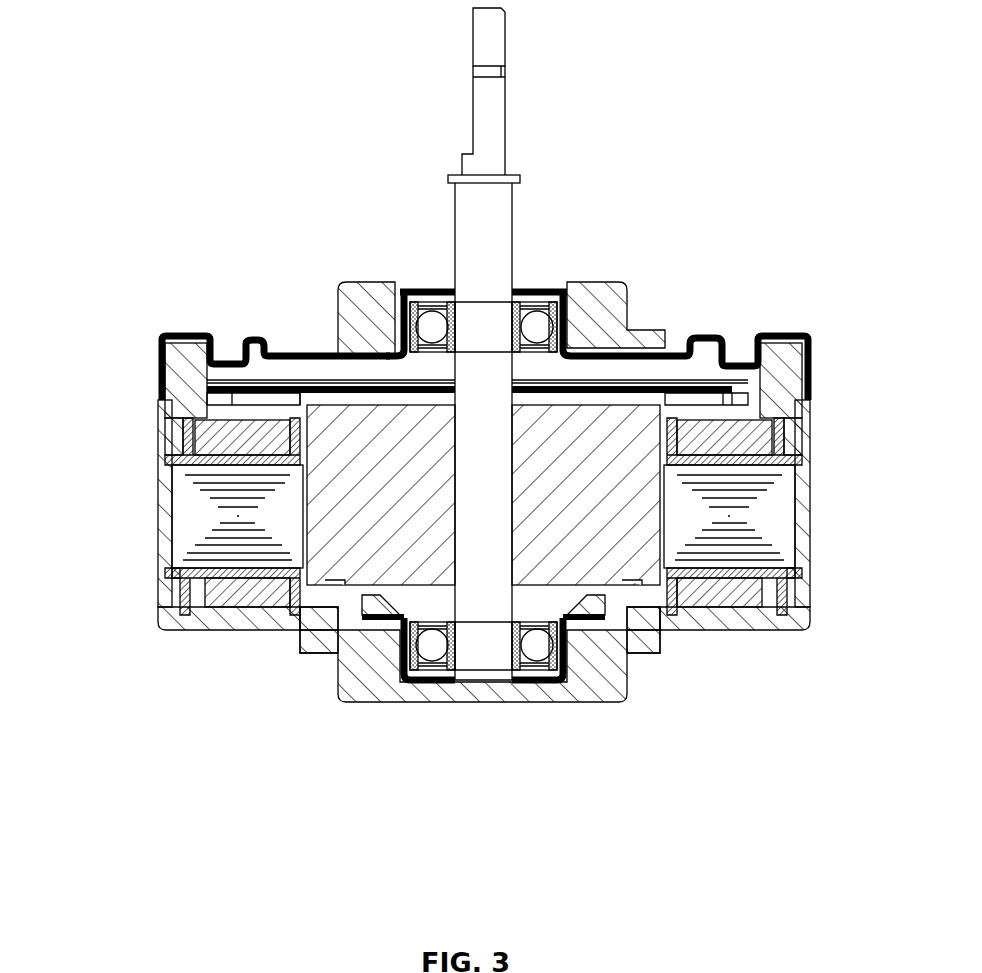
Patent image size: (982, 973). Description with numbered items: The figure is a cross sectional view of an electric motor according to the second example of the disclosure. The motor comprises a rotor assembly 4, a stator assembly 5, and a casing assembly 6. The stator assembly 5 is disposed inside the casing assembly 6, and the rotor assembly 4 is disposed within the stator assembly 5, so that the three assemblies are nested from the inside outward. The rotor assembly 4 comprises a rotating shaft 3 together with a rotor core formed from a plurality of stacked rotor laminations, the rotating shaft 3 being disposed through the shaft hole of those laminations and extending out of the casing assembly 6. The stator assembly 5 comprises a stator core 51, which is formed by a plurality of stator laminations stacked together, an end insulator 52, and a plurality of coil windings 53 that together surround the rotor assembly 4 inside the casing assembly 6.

The rotating shaft 3 is at (484, 253).
The rotor assembly 4 is at (588, 487).
The stator assembly 5 is at (69, 379).
The stator core 51 is at (232, 522).
The end insulator 52 is at (193, 457).
The coil windings 53 is at (242, 440).
The casing assembly 6 is at (795, 446).